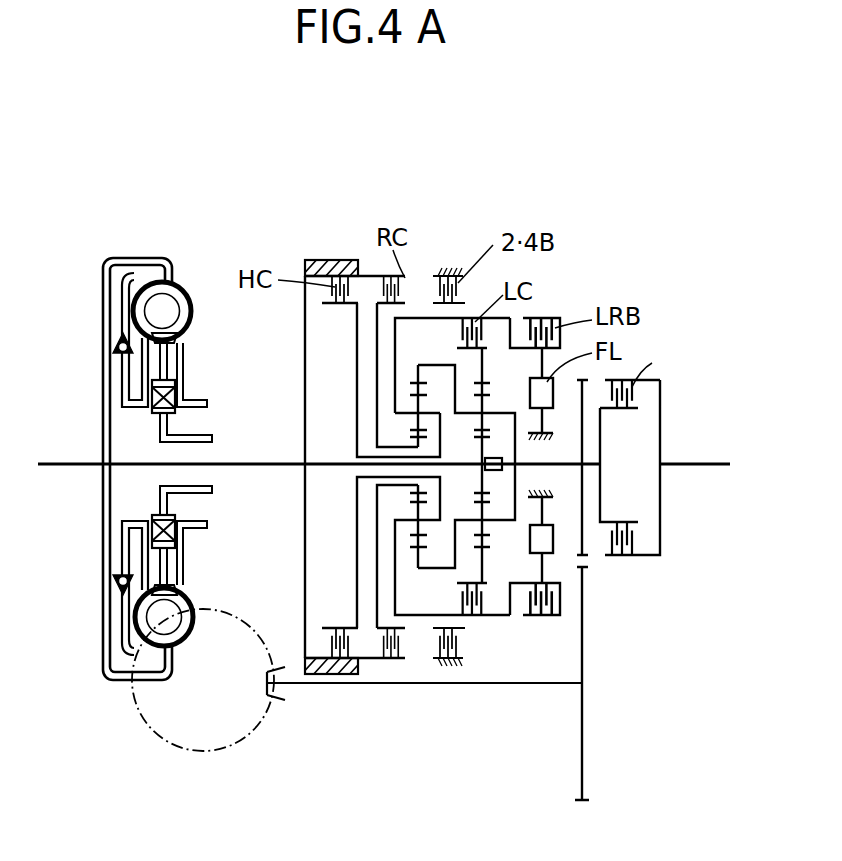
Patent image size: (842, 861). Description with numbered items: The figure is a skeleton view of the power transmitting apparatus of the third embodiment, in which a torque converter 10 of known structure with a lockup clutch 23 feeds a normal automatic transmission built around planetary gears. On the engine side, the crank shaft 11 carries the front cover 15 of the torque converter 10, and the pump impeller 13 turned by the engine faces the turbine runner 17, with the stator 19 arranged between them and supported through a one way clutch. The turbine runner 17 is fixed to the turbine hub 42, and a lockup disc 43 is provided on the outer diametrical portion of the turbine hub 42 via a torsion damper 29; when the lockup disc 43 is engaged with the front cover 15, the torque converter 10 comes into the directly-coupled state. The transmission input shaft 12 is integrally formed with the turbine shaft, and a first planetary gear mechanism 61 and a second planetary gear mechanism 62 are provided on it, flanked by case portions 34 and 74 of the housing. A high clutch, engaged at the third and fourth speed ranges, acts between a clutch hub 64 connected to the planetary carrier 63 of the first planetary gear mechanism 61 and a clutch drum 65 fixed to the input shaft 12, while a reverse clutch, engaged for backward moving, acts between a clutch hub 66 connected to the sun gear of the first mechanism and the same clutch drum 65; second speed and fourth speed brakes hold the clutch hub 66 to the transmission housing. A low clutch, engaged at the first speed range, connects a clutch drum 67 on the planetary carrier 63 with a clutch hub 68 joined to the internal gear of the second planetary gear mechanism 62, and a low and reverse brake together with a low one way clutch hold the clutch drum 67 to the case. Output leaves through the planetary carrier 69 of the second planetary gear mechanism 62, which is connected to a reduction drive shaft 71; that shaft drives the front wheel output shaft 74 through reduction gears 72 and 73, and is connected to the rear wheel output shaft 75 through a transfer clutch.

The torque converter 10 is at (203, 256).
The crank shaft 11 is at (58, 463).
The input shaft 12 is at (275, 463).
The pump impeller 13 is at (189, 313).
The front cover 15 is at (102, 368).
The turbine runner 17 is at (142, 312).
The stator 19 is at (168, 345).
The lockup clutch 23 is at (118, 600).
The torsion damper 29 is at (118, 580).
The transmission case 34 is at (323, 272).
The turbine hub 42 is at (127, 538).
The lockup disc 43 is at (120, 635).
The first planetary gear mechanism 61 is at (418, 588).
The second planetary gear mechanism 62 is at (493, 570).
The planetary carrier 63 is at (447, 512).
The clutch hub 64 is at (335, 304).
The clutch drum 65 is at (382, 277).
The clutch hub 66 is at (393, 304).
The clutch drum 67 is at (422, 320).
The clutch hub 68 is at (472, 348).
The planetary carrier 69 is at (505, 520).
The reduction drive shaft 71 is at (565, 461).
The reduction gear 72 is at (584, 503).
The reduction gear 73 is at (585, 705).
The front wheel output shaft 74 is at (337, 683).
The rear wheel output shaft 75 is at (717, 463).